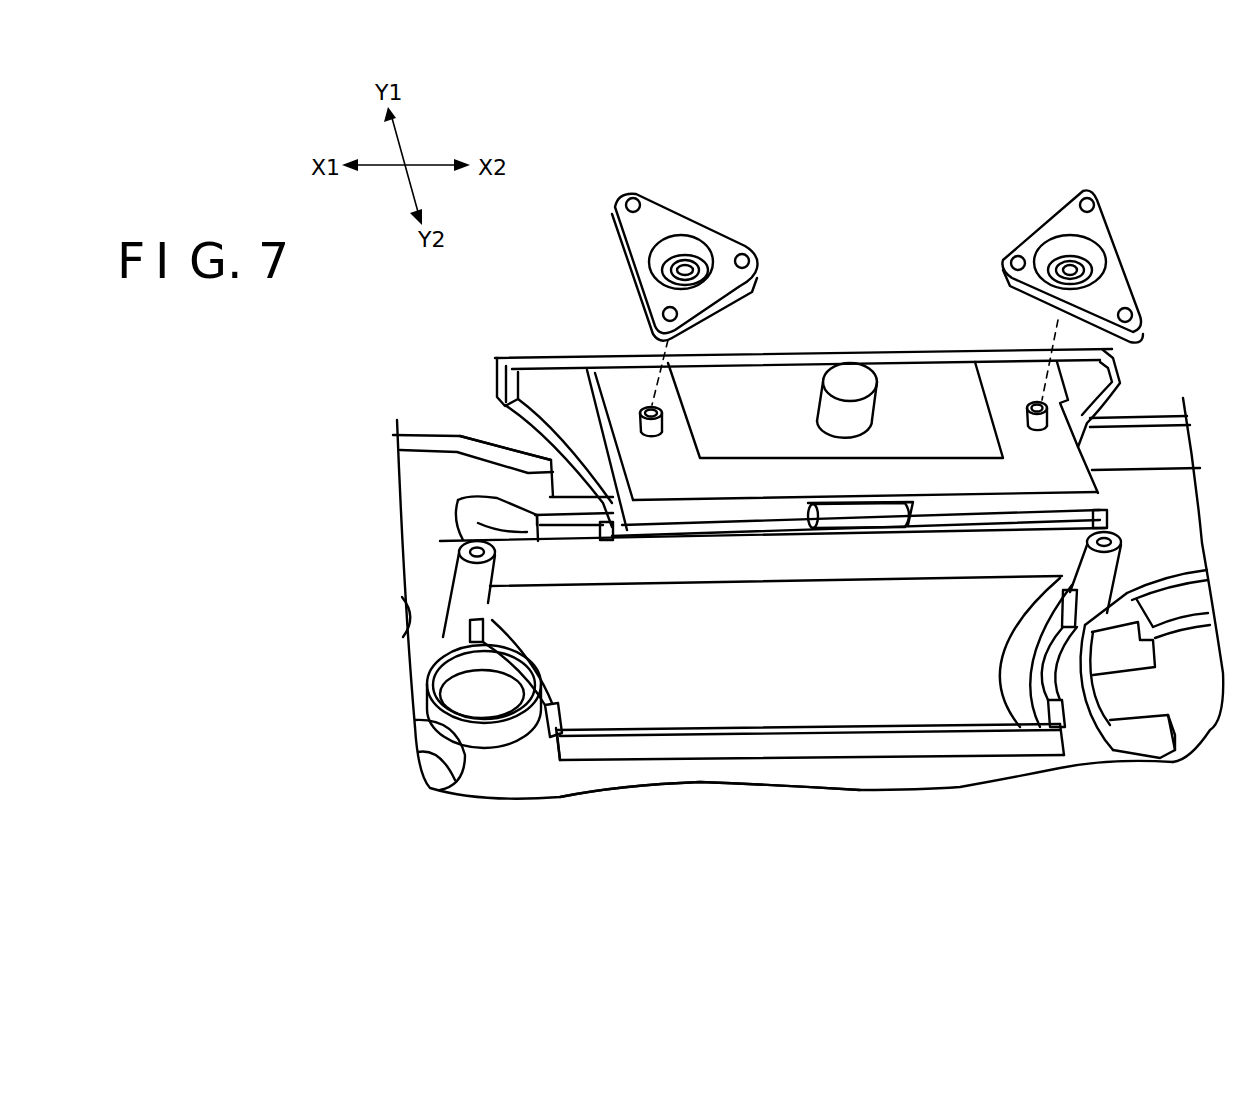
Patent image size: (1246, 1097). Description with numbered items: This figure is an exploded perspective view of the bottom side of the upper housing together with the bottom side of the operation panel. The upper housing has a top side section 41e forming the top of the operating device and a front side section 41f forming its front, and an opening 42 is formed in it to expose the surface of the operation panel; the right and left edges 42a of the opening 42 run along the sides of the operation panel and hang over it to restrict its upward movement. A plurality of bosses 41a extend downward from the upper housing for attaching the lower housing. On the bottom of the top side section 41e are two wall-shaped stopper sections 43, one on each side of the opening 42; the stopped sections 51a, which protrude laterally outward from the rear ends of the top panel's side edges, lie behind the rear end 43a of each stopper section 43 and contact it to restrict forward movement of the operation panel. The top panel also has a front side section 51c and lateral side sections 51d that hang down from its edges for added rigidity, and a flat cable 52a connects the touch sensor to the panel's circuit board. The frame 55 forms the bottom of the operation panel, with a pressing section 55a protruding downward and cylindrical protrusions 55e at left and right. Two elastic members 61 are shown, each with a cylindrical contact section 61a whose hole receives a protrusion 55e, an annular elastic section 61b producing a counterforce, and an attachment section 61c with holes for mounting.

The boss 41a is at (462, 575).
The top side section 41e is at (662, 770).
The front side section 41f is at (487, 472).
The opening 42 is at (810, 700).
The right and left edges of the opening 42a is at (1020, 676).
The stopper section 43 is at (548, 672).
The rear end of the stopper section 43a is at (550, 738).
The stopped section 51a is at (603, 540).
The front side section 51c is at (545, 358).
The lateral side section 51d is at (510, 378).
The flat cable 52a is at (860, 528).
The frame 55 is at (948, 360).
The pressing section 55a is at (850, 372).
The cylindrical protrusion 55e is at (651, 436).
The elastic member 61 is at (713, 193).
The contact section 61a is at (698, 268).
The elastic section 61b is at (671, 245).
The attachment section 61c is at (643, 238).